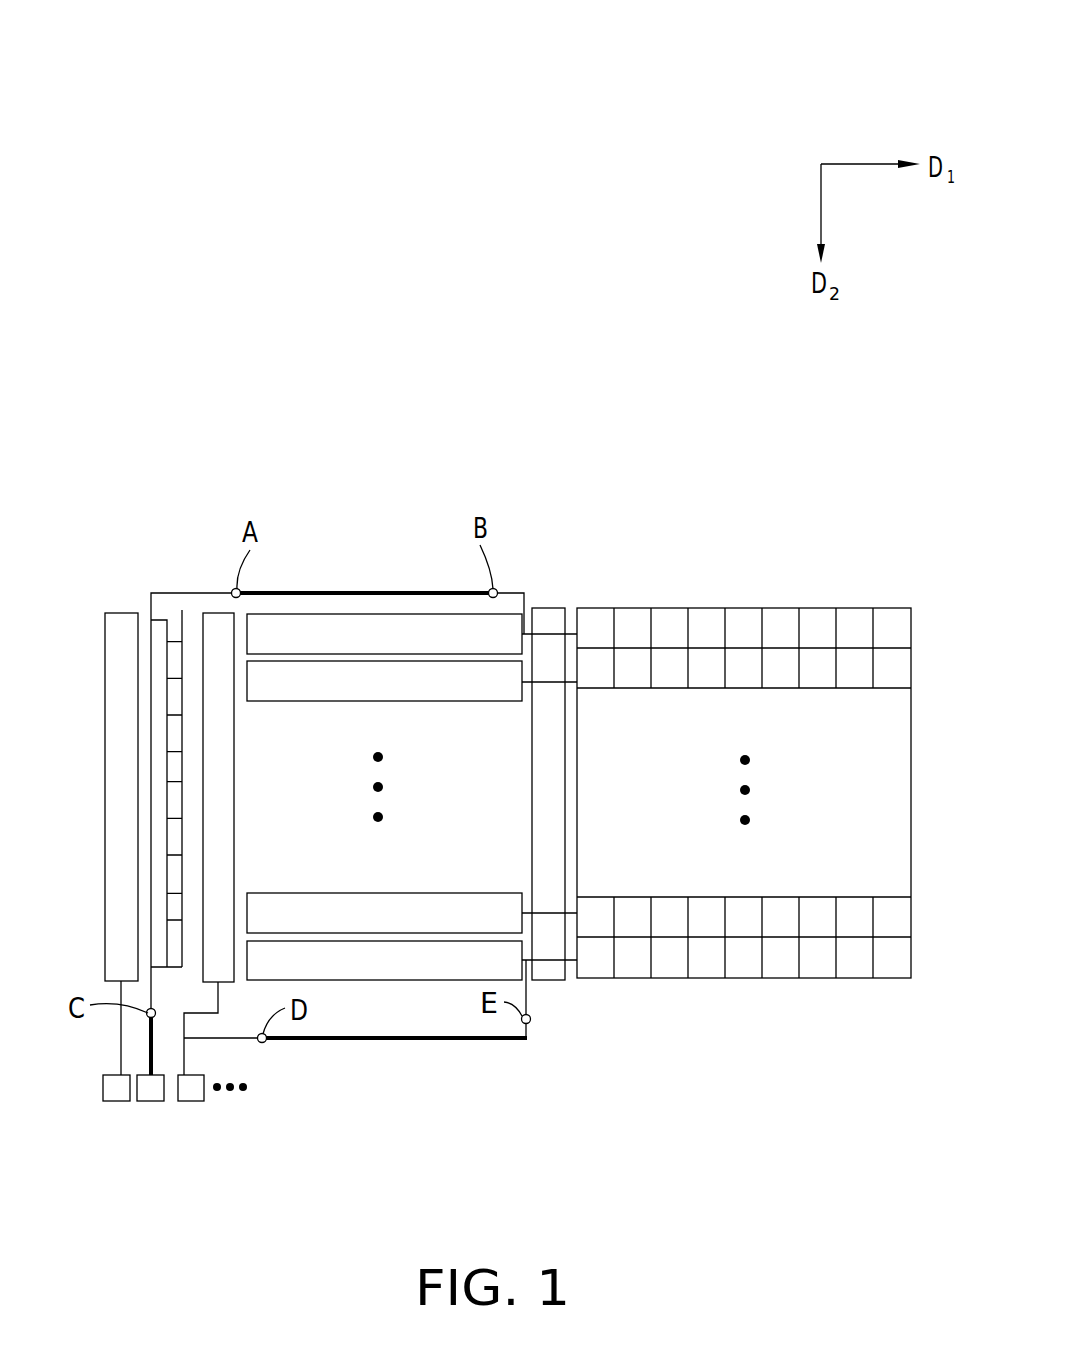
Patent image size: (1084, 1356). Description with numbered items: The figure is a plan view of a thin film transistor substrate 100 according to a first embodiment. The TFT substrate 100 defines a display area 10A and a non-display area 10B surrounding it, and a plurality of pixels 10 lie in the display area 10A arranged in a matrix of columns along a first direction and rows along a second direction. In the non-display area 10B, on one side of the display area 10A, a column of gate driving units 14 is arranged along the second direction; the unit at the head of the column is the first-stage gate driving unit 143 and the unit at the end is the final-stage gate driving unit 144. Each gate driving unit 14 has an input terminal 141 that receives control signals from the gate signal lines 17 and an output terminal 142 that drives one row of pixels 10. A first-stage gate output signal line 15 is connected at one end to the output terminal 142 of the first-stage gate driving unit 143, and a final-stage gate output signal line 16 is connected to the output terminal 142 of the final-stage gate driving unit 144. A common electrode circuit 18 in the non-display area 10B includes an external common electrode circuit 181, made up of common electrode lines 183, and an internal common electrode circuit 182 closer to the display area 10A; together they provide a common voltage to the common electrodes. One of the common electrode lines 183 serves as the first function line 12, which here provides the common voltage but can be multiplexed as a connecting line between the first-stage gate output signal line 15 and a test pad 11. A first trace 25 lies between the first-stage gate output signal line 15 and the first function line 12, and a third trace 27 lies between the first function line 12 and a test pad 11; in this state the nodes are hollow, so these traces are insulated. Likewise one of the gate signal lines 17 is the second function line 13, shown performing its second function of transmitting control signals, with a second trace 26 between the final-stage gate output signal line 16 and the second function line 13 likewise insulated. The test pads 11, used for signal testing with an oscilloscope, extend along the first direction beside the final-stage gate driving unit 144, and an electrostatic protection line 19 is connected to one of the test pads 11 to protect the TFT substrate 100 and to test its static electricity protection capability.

The thin film transistor substrate 100 is at (547, 38).
The pixels 10 is at (890, 625).
The display area 10A is at (722, 433).
The non-display area 10B is at (357, 433).
The test pads 11 is at (108, 1088).
The first function line 12 is at (148, 777).
The second function line 13 is at (214, 1084).
The gate driving units 14 is at (391, 813).
The input terminal 141 is at (244, 641).
The output terminal 142 is at (525, 602).
The first-stage gate driving unit 143 is at (325, 635).
The final-stage gate driving unit 144 is at (457, 967).
The first-stage gate output signal line 15 is at (508, 592).
The final-stage gate output signal line 16 is at (529, 1006).
The gate signal lines 17 is at (205, 1037).
The common electrode circuit 18 is at (357, 997).
The external common electrode circuit 181 is at (167, 940).
The internal common electrode circuit 182 is at (547, 782).
The common electrode lines 183 is at (150, 693).
The electrostatic protection line 19 is at (118, 885).
The first trace 25 is at (408, 592).
The second trace 26 is at (402, 1040).
The third trace 27 is at (149, 1050).